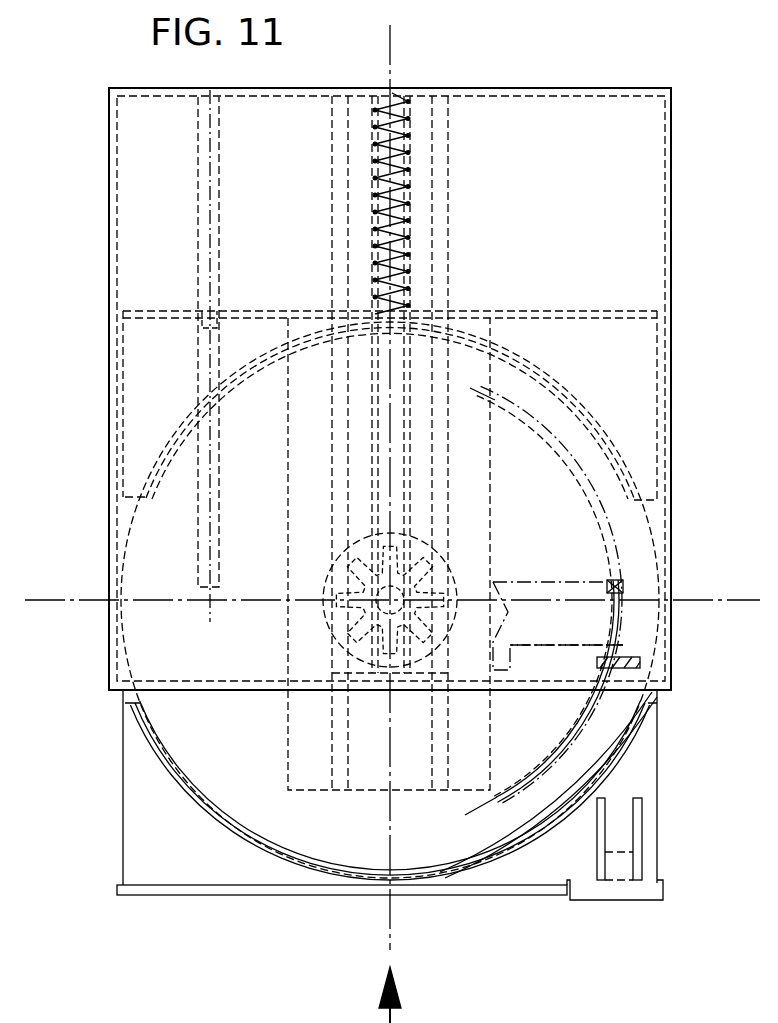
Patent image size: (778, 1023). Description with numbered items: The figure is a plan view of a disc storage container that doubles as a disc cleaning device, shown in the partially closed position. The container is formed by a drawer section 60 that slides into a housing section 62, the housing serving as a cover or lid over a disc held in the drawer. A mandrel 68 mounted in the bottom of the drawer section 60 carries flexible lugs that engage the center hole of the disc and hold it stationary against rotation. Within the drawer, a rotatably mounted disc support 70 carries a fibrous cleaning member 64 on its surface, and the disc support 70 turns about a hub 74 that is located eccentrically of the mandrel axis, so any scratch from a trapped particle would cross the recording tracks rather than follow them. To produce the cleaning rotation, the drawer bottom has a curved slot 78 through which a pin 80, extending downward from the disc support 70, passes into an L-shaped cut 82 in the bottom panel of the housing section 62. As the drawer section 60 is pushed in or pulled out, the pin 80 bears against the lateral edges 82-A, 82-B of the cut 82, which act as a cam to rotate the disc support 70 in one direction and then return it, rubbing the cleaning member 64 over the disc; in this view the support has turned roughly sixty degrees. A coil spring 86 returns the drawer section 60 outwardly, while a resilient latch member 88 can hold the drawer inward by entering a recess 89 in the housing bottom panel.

The drawer section 60 is at (123, 820).
The housing section 62 is at (109, 540).
The cleaning member 64 is at (262, 759).
The mandrel 68 is at (420, 566).
The disc support 70 is at (483, 796).
The hub 74 is at (340, 637).
The curved slot 78 is at (563, 733).
The pin 80 is at (606, 580).
The L-shaped cut 82 is at (513, 586).
The lateral edge 82-A is at (603, 565).
The lateral edge 82-B is at (583, 645).
The coil spring 86 is at (410, 193).
The resilient latch member 88 is at (627, 860).
The recess 89 is at (633, 657).